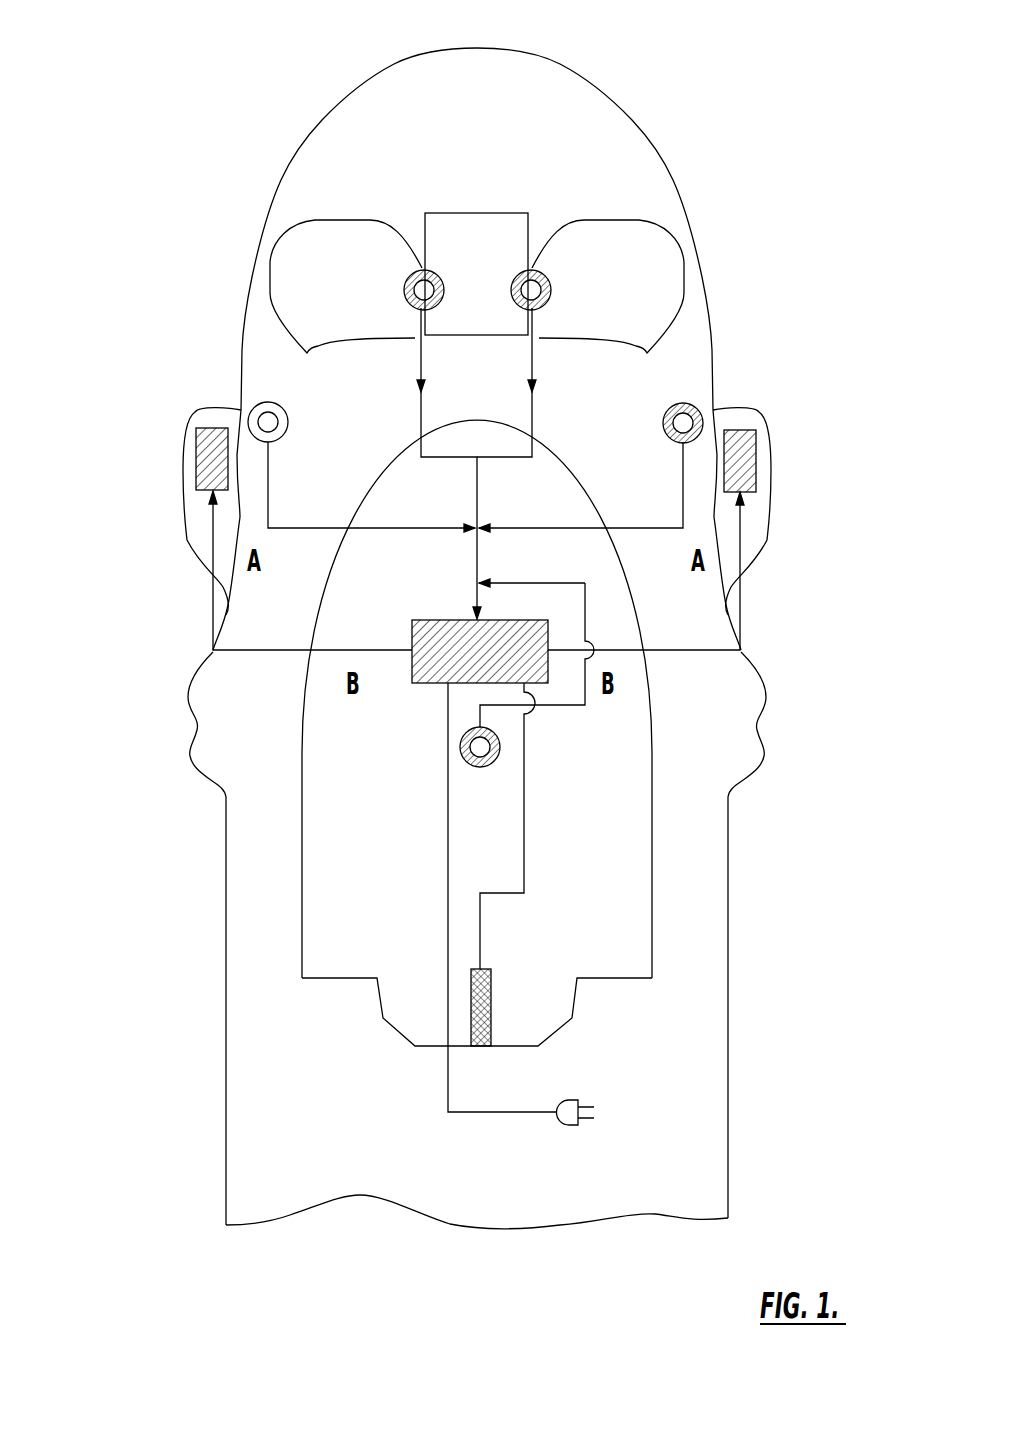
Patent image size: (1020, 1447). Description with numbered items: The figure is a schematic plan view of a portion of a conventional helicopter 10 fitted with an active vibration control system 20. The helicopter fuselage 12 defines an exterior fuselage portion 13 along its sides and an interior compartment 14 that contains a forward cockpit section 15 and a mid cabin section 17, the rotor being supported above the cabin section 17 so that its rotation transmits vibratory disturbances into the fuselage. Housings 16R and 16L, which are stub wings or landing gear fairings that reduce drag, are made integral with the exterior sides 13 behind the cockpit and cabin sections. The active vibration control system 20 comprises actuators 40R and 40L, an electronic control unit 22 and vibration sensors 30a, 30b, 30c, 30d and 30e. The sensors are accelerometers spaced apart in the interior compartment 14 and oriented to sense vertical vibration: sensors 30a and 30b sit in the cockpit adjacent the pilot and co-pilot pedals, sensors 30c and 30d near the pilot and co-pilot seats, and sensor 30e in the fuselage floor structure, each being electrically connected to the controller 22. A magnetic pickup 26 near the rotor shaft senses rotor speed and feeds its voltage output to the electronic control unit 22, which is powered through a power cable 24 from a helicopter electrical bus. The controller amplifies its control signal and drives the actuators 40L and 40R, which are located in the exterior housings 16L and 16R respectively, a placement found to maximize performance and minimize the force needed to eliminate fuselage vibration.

The helicopter 10 is at (752, 146).
The helicopter fuselage 12 is at (184, 311).
The exterior fuselage portion 13 is at (311, 125).
The interior compartment 14 is at (372, 424).
The cockpit section 15 is at (479, 235).
The housing 16L is at (205, 522).
The housing 16R is at (752, 530).
The cabin section 17 is at (598, 888).
The active vibration control system 20 is at (628, 410).
The electronic control unit 22 is at (427, 678).
The power cable 24 is at (448, 835).
The magnetic pickup 26 is at (492, 997).
The vibration sensor 30a is at (404, 290).
The vibration sensor 30b is at (551, 290).
The vibration sensor 30c is at (270, 402).
The vibration sensor 30d is at (673, 440).
The vibration sensor 30e is at (490, 763).
The actuator 40L is at (185, 450).
The actuator 40R is at (790, 435).